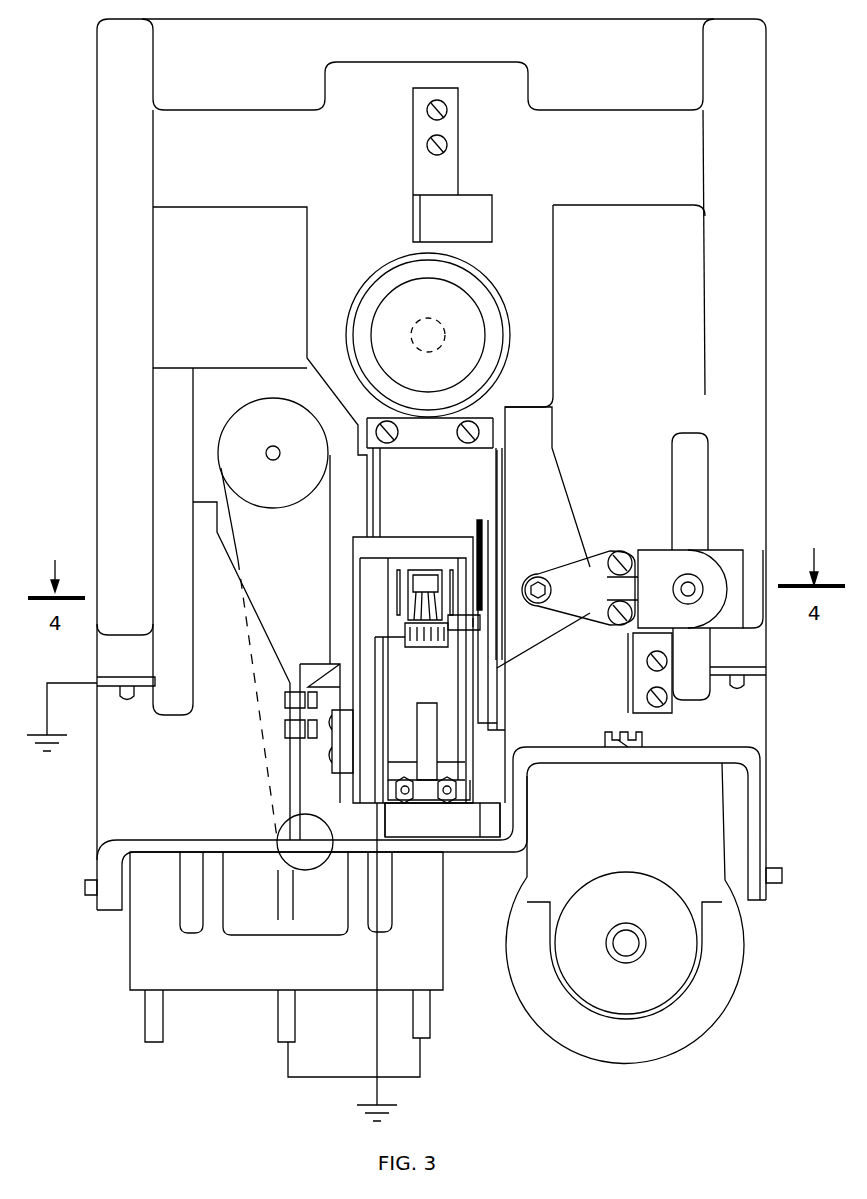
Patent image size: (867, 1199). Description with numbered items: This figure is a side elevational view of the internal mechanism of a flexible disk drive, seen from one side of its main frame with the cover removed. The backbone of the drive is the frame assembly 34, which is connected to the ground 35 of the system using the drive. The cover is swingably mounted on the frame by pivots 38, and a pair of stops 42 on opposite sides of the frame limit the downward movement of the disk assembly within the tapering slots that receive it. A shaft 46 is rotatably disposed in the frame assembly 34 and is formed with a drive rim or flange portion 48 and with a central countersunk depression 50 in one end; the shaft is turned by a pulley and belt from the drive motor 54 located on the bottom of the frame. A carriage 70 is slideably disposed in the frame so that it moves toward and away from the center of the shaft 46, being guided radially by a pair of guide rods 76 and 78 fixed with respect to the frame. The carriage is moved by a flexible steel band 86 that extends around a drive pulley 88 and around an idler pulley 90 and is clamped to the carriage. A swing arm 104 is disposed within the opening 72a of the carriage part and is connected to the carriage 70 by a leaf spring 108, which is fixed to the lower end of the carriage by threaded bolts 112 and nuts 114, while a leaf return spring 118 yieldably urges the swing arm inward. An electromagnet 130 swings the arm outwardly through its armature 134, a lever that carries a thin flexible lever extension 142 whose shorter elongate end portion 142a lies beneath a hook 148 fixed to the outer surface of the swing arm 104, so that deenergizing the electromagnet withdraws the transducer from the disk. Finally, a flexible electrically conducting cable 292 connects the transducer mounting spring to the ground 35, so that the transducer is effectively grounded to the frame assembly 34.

The frame assembly 34 is at (94, 812).
The ground 35 is at (42, 732).
The pivots 38 is at (90, 896).
The stops 42 is at (127, 677).
The shaft 46 is at (428, 353).
The drive rim or flange portion 48 is at (370, 306).
The central countersunk depression 50 is at (470, 318).
The drive motor 54 is at (528, 1032).
The carriage 70 is at (429, 533).
The opening 72a is at (405, 628).
The guide rod 76 is at (380, 481).
The guide rod 78 is at (496, 481).
The flexible steel band 86 is at (330, 576).
The drive pulley 88 is at (262, 433).
The idler pulley 90 is at (311, 870).
The swing arm 104 is at (414, 681).
The leaf spring 108 is at (455, 770).
The threaded bolts 112 is at (460, 793).
The nuts 114 is at (448, 797).
The leaf return spring 118 is at (437, 742).
The electromagnet 130 is at (730, 540).
The armature 134 is at (568, 602).
The lever extension 142 is at (551, 536).
The end portion 142a is at (502, 665).
The hook 148 is at (488, 627).
The flexible electrically conducting cable 292 is at (377, 968).